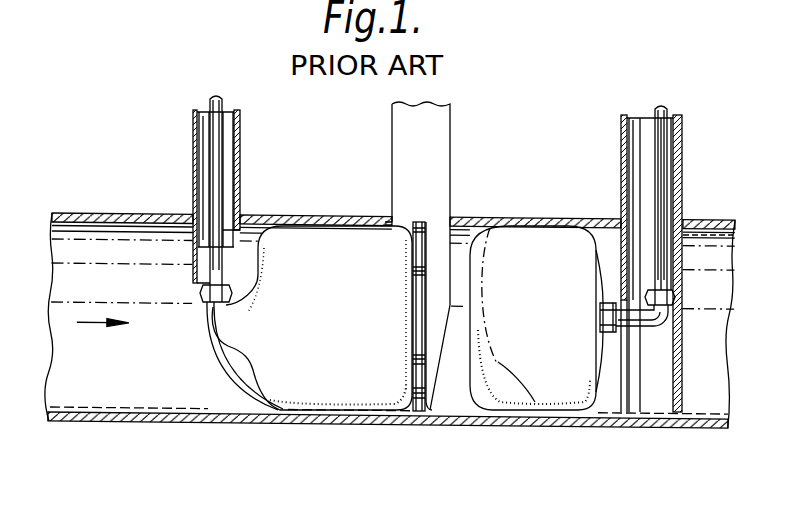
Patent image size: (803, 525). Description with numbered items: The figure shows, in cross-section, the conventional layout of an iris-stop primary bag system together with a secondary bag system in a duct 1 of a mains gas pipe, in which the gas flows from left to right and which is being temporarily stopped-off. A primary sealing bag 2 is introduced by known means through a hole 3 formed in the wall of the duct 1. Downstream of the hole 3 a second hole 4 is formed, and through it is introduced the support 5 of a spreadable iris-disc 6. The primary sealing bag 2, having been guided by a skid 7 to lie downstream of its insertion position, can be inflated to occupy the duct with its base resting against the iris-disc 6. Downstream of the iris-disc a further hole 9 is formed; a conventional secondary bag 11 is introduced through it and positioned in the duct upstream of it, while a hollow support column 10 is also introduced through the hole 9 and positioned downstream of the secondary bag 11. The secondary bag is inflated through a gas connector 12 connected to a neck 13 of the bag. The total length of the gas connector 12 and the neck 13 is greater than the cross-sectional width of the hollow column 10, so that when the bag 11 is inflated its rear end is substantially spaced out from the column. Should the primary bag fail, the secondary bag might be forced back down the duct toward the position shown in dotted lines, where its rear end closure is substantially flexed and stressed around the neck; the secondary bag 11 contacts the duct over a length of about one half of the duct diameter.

The duct 1 is at (110, 419).
The primary sealing bag 2 is at (348, 394).
The hole 3 is at (190, 214).
The second hole 4 is at (388, 221).
The support 5 is at (438, 297).
The spreadable iris-disc 6 is at (423, 413).
The skid 7 is at (228, 374).
The further hole 9 is at (688, 220).
The hollow support column 10 is at (683, 157).
The secondary bag 11 is at (538, 288).
The gas connector 12 is at (660, 336).
The neck 13 is at (605, 300).